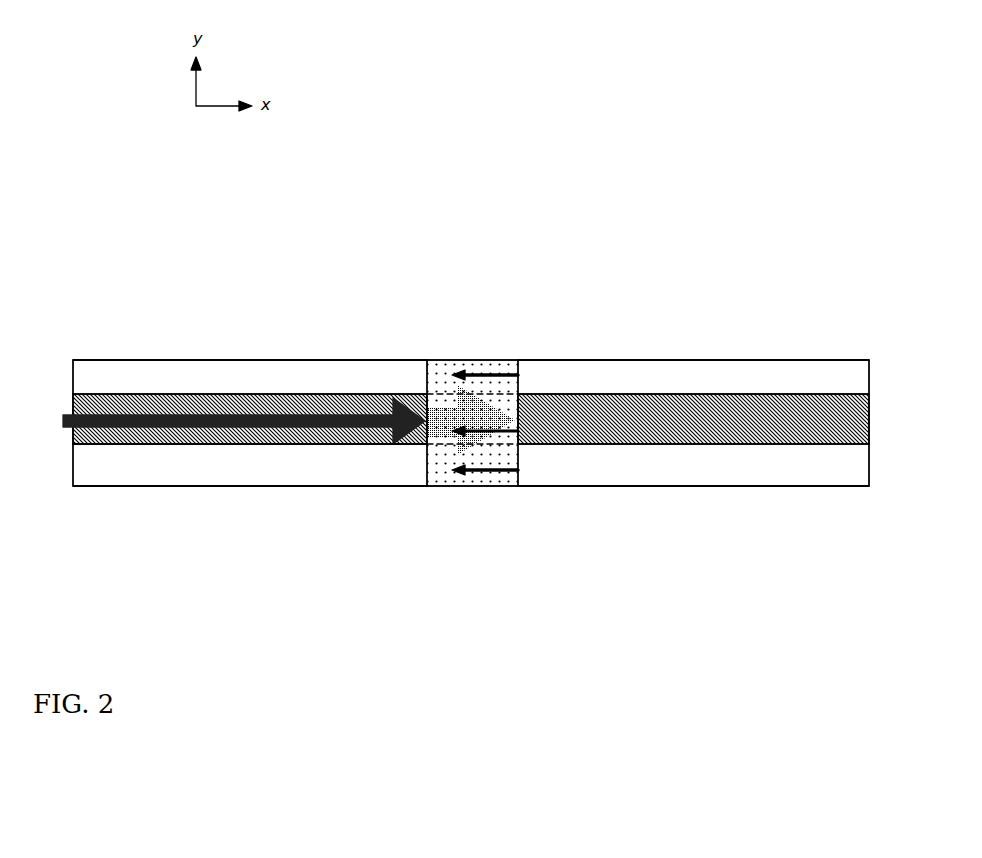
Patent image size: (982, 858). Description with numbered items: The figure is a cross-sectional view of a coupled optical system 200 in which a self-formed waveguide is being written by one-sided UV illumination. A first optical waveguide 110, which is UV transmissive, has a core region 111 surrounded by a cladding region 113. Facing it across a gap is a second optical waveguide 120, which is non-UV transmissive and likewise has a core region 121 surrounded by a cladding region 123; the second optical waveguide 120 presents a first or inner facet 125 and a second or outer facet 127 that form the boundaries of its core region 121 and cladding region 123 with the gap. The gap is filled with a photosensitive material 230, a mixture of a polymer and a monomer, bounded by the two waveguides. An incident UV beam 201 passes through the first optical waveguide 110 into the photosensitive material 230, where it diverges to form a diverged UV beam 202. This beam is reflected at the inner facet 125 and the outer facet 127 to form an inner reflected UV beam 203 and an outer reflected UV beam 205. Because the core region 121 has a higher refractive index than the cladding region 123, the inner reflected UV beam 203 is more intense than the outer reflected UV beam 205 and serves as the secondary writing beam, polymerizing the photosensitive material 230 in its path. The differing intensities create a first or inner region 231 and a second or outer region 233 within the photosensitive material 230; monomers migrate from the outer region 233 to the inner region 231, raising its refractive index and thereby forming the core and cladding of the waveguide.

The coupled optical system 200 is at (786, 225).
The first optical waveguide 110 is at (127, 523).
The core region 111 is at (184, 436).
The cladding region 113 is at (270, 462).
The incident UV beam 201 is at (335, 407).
The second optical waveguide 120 is at (797, 514).
The core region 121 is at (661, 442).
The cladding region 123 is at (713, 460).
The first or inner facet 125 is at (518, 418).
The second or outer facet 127 is at (518, 373).
The diverged UV beam 202 is at (437, 435).
The inner reflected UV beam 203 is at (482, 432).
The outer reflected UV beam 205 is at (504, 466).
The photosensitive material 230 is at (463, 505).
The first or inner region 231 is at (438, 401).
The second or outer region 233 is at (452, 456).